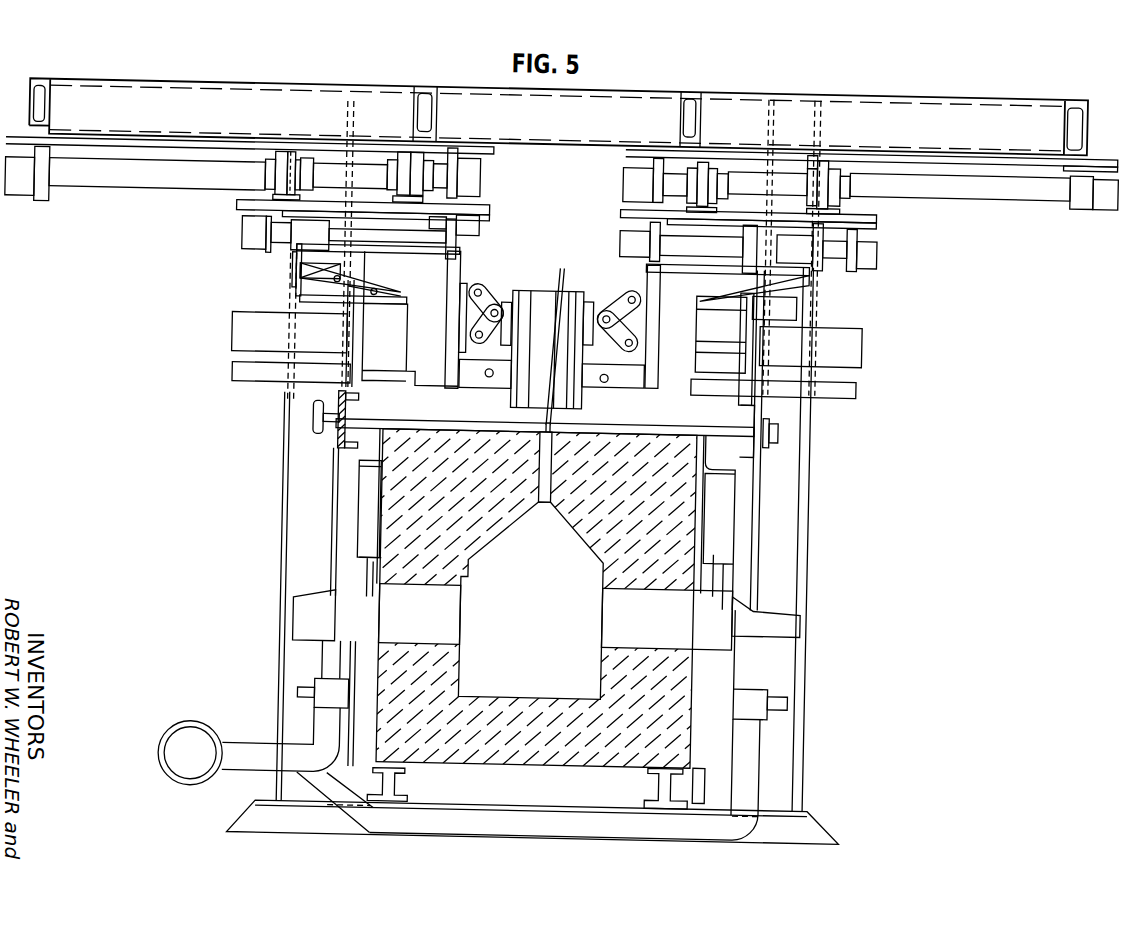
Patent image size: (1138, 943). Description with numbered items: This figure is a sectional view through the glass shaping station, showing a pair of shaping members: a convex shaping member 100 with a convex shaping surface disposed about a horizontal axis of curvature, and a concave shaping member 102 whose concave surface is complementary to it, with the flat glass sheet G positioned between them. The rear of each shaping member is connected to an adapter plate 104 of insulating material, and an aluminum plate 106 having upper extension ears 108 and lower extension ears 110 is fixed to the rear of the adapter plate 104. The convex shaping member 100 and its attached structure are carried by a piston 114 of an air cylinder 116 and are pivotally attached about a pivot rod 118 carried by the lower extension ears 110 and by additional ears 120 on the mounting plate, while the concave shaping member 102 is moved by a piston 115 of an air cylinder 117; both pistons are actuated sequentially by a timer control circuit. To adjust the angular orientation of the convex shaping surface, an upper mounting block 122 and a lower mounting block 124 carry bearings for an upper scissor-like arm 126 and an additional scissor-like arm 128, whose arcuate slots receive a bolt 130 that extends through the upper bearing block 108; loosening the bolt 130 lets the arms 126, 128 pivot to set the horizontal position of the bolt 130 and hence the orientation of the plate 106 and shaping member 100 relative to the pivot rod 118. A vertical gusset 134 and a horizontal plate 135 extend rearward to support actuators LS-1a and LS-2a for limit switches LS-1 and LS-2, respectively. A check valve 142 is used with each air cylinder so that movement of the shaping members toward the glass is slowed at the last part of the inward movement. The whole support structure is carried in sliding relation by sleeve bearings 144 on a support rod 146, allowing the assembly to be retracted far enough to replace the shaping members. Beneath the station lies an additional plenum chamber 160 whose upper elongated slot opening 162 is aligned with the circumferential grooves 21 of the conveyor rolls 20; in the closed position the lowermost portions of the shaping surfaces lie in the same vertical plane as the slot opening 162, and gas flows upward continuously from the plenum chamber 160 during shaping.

The support rod 146 is at (88, 182).
The sleeve bearings 144 is at (396, 169).
The horizontal plate 135 is at (386, 253).
The actuator LS-1a is at (296, 268).
The limit switch LS-1 is at (334, 283).
The limit switch LS-2 is at (370, 295).
The actuator LS-2a is at (389, 279).
The air cylinder 116 is at (272, 354).
The check valve 142 is at (239, 384).
The piston 114 is at (371, 342).
The upper mounting block 122 is at (462, 292).
The lower mounting block 124 is at (461, 354).
The upper scissor-like arm 126 is at (470, 300).
The additional scissor-like arm 128 is at (471, 335).
The bolt 130 is at (546, 338).
The vertical gusset 134 is at (443, 327).
The upper extension ears 108 is at (506, 294).
The convex shaping member 100 is at (521, 292).
The adapter plate 104 is at (508, 292).
The aluminum plate 106 is at (501, 293).
The concave shaping member 102 is at (562, 292).
The glass sheet G is at (550, 290).
The additional ears 120 is at (468, 386).
The pivot rod 118 is at (489, 380).
The lower extension ears 110 is at (505, 384).
The conveyor rolls 20 is at (650, 422).
The circumferential grooves 21 is at (550, 425).
The piston 115 is at (704, 325).
The air cylinder 117 is at (800, 356).
The additional plenum chamber 160 is at (551, 617).
The upper elongated slot opening 162 is at (541, 488).